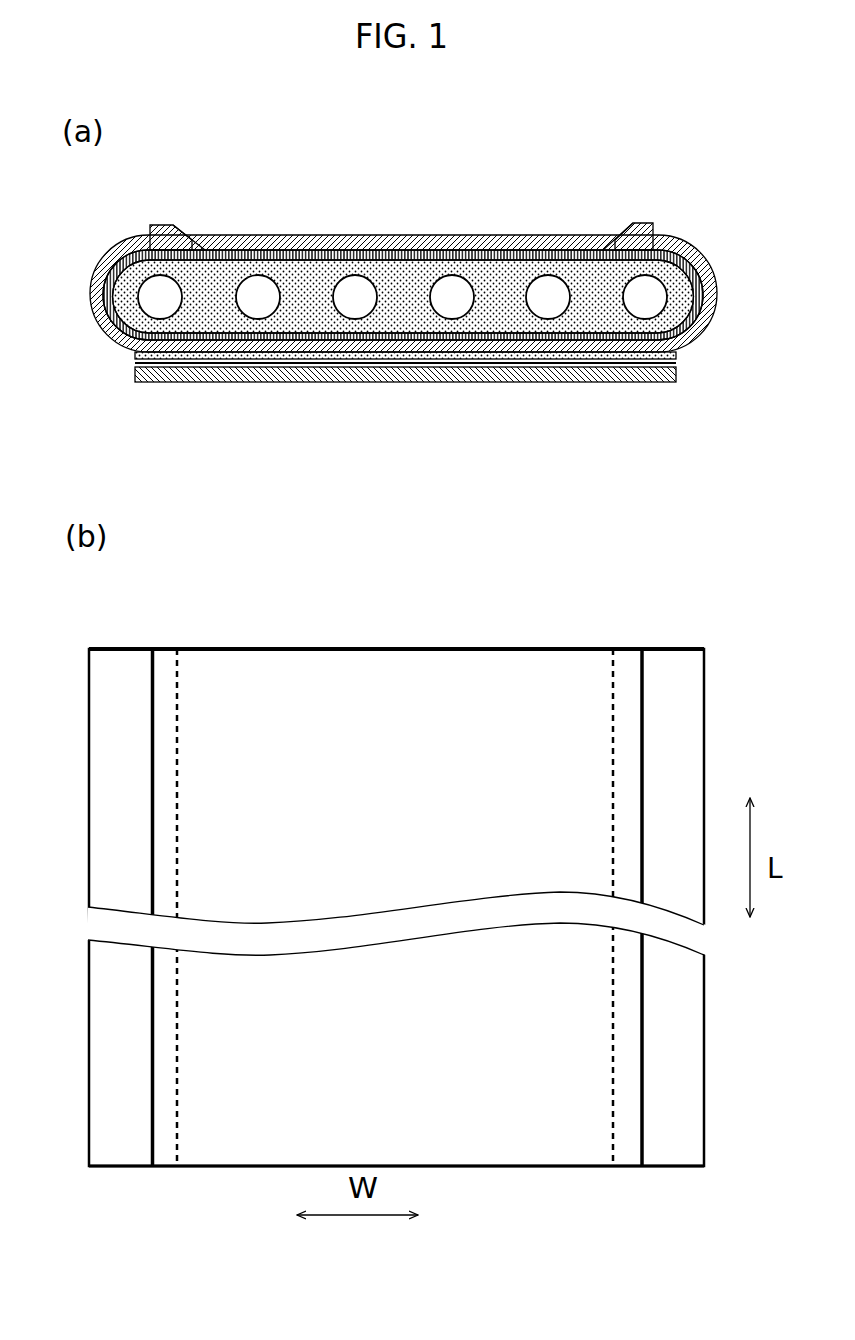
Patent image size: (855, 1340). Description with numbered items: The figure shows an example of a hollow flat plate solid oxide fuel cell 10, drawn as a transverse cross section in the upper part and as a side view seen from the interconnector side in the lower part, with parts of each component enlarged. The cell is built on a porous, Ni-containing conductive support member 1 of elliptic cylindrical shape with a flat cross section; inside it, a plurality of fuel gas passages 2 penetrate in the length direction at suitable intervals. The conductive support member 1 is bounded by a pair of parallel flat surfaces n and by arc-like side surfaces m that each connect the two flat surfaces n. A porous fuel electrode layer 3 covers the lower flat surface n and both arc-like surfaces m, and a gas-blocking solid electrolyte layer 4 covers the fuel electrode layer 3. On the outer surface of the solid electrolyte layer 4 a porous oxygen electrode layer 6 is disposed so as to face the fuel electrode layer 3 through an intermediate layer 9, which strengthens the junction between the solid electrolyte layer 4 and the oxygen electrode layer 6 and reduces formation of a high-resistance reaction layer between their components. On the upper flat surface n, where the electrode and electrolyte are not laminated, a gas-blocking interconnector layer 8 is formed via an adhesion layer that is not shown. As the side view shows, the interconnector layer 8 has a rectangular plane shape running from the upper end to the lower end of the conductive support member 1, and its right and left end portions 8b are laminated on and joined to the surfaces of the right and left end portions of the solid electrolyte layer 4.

The conductive support member 1 is at (300, 316).
The fuel gas passages 2 is at (340, 296).
The fuel electrode layer 3 is at (685, 342).
The solid electrolyte layer 4 is at (568, 343).
The oxygen electrode layer 6 is at (548, 373).
The interconnector layer 8 is at (348, 243).
The end portions of the interconnector layer 8b is at (163, 662).
The intermediate layer 9 is at (423, 358).
The fuel cell 10 is at (692, 247).
The flat surfaces n is at (495, 262).
The arc-like surfaces m is at (103, 301).